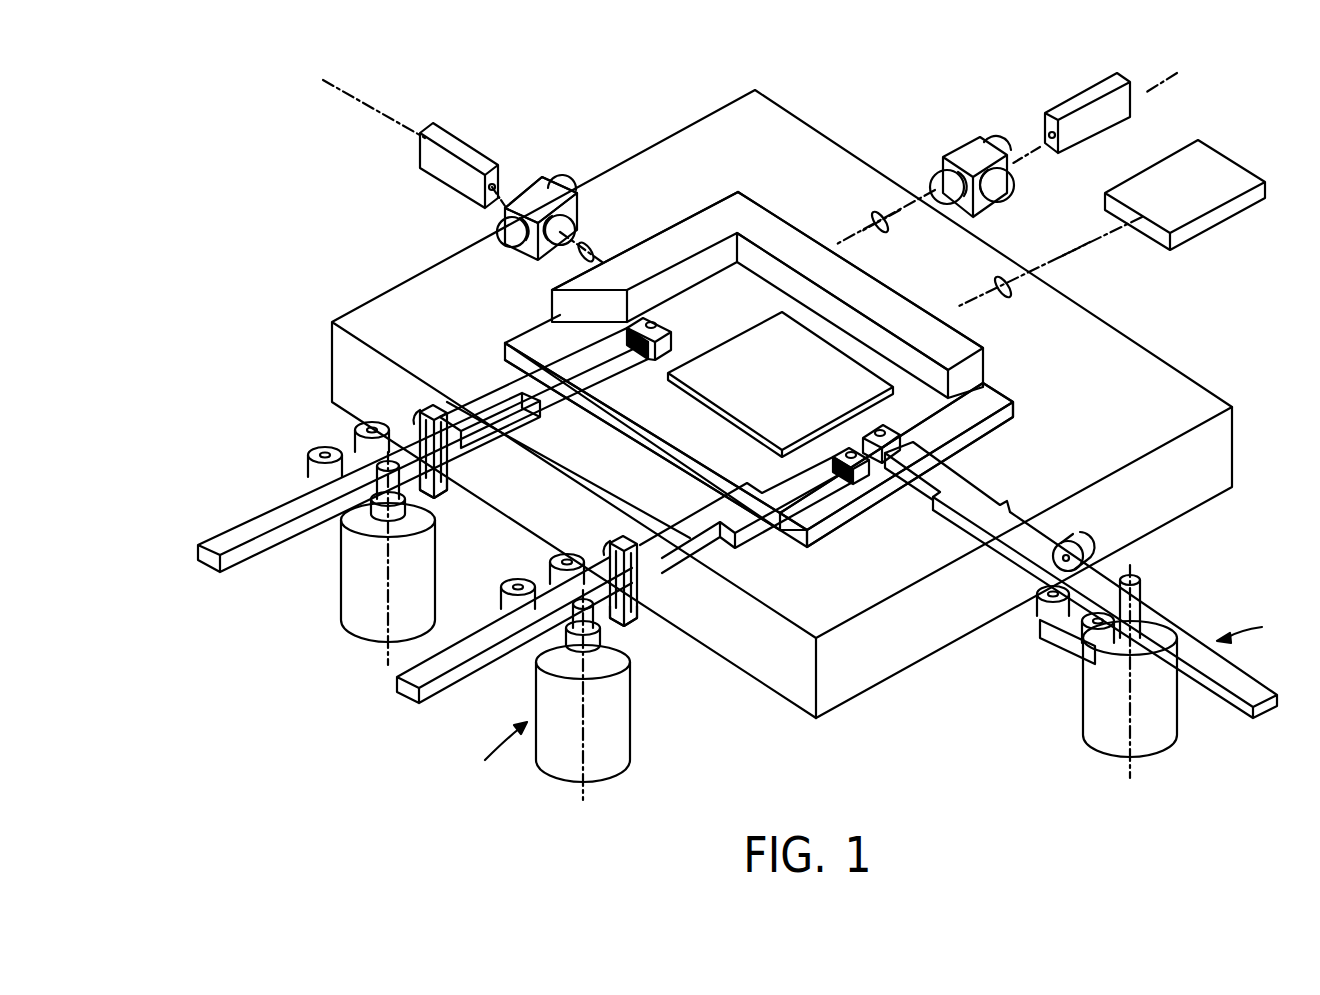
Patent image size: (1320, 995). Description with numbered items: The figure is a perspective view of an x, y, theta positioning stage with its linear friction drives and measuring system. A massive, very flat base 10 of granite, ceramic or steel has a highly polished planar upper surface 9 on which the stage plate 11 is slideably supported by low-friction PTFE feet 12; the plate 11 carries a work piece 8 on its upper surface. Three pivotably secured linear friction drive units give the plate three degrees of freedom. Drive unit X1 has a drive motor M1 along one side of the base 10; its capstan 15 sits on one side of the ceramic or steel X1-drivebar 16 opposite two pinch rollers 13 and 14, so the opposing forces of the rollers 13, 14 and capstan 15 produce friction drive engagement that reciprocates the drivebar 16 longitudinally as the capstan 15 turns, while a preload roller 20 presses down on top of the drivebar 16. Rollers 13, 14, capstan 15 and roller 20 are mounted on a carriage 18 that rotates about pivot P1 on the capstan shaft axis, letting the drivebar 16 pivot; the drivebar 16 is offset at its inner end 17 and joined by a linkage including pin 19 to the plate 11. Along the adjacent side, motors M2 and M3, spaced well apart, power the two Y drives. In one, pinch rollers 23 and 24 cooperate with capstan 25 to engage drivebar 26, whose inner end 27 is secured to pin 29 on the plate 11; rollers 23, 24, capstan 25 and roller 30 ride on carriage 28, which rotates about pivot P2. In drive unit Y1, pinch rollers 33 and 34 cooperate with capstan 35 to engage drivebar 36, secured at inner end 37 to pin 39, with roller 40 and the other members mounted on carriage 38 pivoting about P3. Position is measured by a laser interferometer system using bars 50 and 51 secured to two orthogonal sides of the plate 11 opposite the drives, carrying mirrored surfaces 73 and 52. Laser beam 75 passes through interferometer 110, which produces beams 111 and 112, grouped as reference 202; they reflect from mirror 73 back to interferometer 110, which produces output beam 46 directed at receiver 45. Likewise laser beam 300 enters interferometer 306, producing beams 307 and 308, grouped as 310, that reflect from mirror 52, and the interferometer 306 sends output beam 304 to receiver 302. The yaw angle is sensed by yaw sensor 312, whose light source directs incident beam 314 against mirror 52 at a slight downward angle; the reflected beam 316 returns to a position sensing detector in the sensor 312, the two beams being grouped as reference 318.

The work piece 8 is at (756, 388).
The upper surface 9 is at (356, 318).
The base 10 is at (1195, 384).
The stage plate 11 is at (516, 343).
The feet 12 is at (800, 541).
The pinch roller 13 is at (1045, 607).
The pinch roller 14 is at (1090, 642).
The capstan 15 is at (1142, 600).
The X1-drivebar 16 is at (1245, 693).
The inner end 17 is at (985, 504).
The carriage 18 is at (1055, 645).
The pin 19 is at (890, 440).
The preload roller 20 is at (1084, 547).
The pinch roller 23 is at (552, 566).
The pinch roller 24 is at (502, 592).
The capstan 25 is at (546, 650).
The drivebar 26 is at (426, 684).
The inner end 27 is at (745, 522).
The carriage 28 is at (630, 620).
The pin 29 is at (850, 472).
The roller 30 is at (606, 540).
The pinch roller 33 is at (356, 428).
The pinch roller 34 is at (308, 455).
The capstan 35 is at (372, 507).
The drivebar 36 is at (220, 543).
The inner end 37 is at (592, 362).
The carriage 38 is at (440, 492).
The pin 39 is at (663, 328).
The roller 40 is at (405, 425).
The receiver 45 is at (460, 138).
The output beam 46 is at (515, 193).
The bar 50 is at (746, 213).
The bar 51 is at (802, 262).
The mirrored surface 52 is at (780, 203).
The mirrored surface 73 is at (718, 200).
The laser beam 75 is at (348, 100).
The interferometer 110 is at (494, 228).
The beam 111 is at (577, 256).
The beam 112 is at (570, 234).
The beam group 202 is at (596, 246).
The laser beam 300 is at (1165, 90).
The receiver 302 is at (1075, 108).
The output beam 304 is at (1025, 148).
The interferometer 306 is at (968, 160).
The beam 307 is at (874, 218).
The beam 308 is at (910, 203).
The beam group 310 is at (886, 226).
The yaw sensor 312 is at (1210, 153).
The incident light beam 314 is at (1048, 262).
The reflected beam 316 is at (1065, 248).
The beam group 318 is at (1008, 292).
The drive motor M1 is at (1083, 721).
The drive motor M2 is at (632, 722).
The drive motor M3 is at (348, 602).
The pivot P1 is at (1134, 567).
The pivot P2 is at (302, 562).
The pivot P3 is at (386, 659).
The drive unit X1 is at (1256, 627).
The drive unit Y1 is at (490, 752).